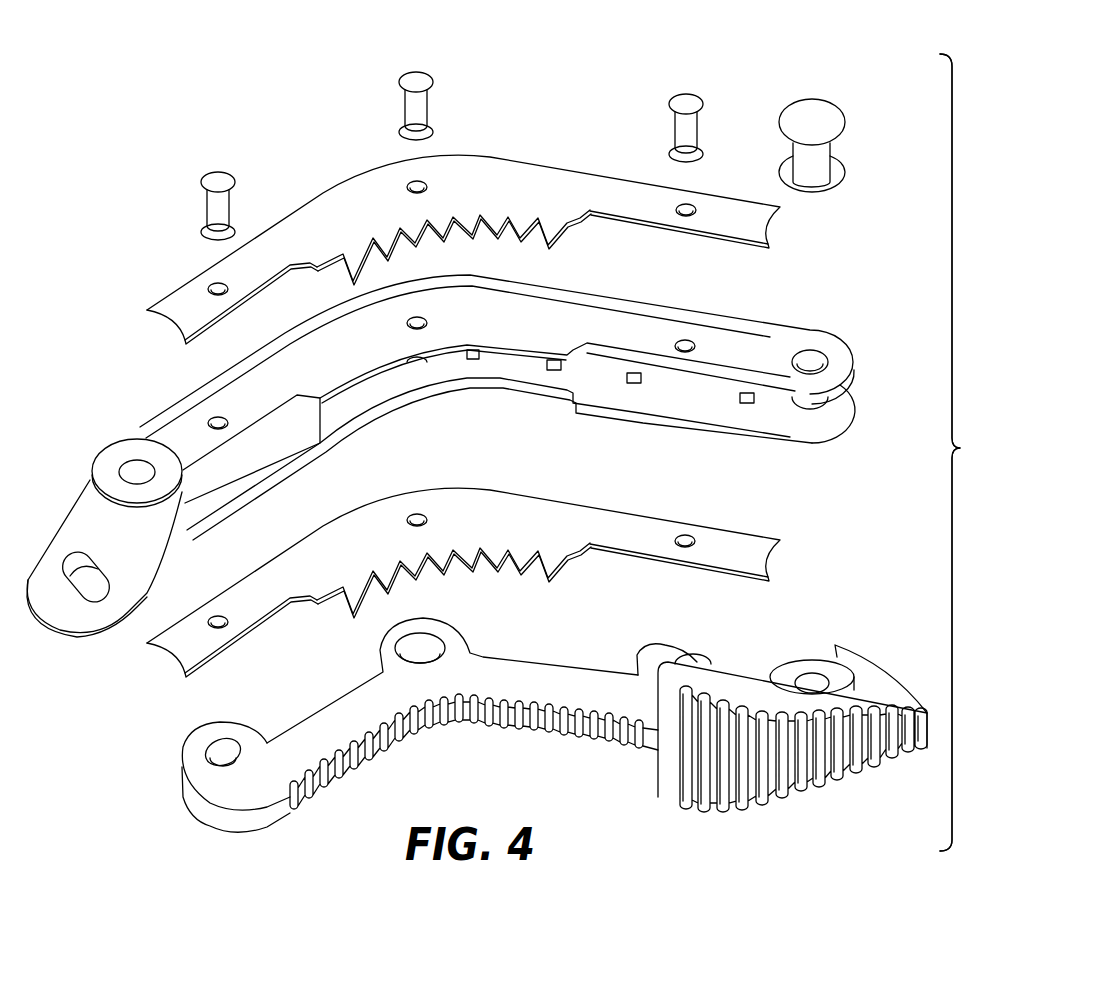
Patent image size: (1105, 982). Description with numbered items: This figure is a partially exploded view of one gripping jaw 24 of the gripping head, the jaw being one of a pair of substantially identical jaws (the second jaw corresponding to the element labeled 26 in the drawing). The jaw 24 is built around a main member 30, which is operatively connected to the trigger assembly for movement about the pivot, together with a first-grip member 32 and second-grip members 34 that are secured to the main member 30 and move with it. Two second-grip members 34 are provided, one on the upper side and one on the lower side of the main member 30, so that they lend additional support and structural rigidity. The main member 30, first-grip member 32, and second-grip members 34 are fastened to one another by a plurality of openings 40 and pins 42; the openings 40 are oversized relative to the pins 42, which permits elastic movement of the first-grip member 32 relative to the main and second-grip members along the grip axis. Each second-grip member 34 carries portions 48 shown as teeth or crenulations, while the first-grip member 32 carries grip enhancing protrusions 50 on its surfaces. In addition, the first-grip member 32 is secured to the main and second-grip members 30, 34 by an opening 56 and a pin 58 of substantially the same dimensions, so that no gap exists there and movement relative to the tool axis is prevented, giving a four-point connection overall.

The gripping jaw 24 is at (963, 447).
The locking assembly 26 is at (1001, 452).
The main member 30 is at (103, 452).
The first-grip member 32 is at (183, 770).
The second-grip member 34 is at (325, 192).
The openings 40 is at (415, 181).
The pins 42 is at (212, 172).
The portions 48 is at (471, 240).
The grip enhancing protrusions 50 is at (387, 752).
The opening 56 is at (812, 350).
The pin 58 is at (834, 108).